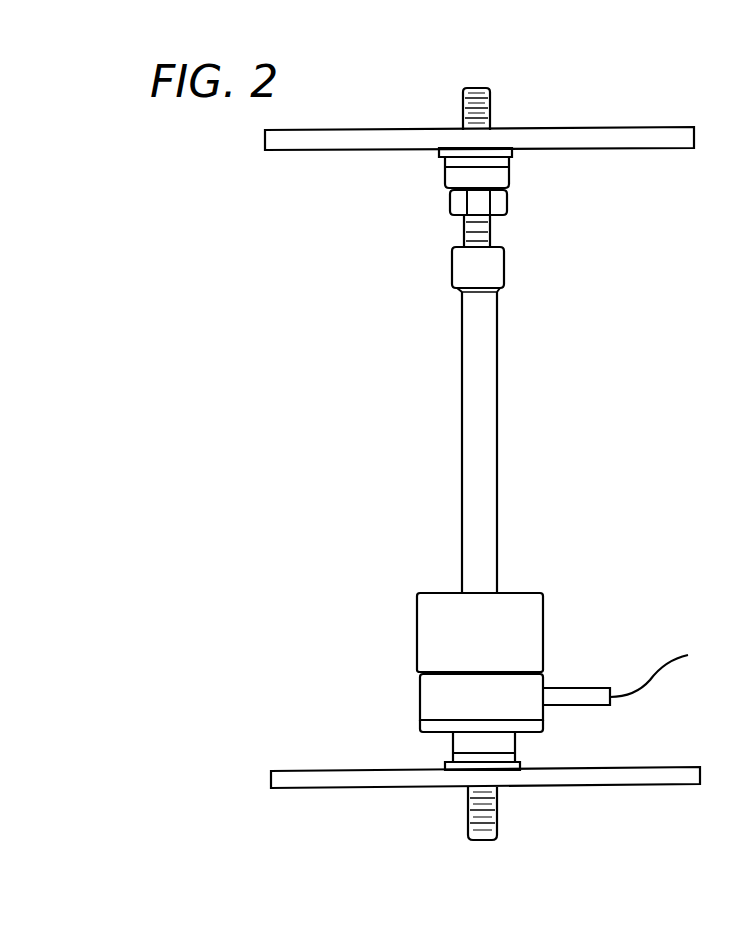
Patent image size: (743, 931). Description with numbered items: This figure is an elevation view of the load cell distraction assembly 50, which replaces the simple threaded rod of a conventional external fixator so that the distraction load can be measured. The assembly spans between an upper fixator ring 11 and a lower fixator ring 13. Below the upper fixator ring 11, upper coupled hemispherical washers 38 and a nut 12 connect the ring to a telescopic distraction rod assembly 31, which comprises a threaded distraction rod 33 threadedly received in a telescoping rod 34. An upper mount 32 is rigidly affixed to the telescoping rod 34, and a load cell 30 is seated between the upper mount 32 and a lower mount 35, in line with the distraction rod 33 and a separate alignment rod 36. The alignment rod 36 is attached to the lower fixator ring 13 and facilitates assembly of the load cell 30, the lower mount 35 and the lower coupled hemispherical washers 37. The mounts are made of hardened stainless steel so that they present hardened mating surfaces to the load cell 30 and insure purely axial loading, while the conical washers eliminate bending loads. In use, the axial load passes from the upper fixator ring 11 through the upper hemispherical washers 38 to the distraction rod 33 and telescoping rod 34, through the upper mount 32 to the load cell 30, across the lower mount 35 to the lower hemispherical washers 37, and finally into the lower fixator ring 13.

The upper fixator ring 11 is at (370, 129).
The nut 12 is at (450, 196).
The lower fixator ring 13 is at (331, 788).
The load cell 30 is at (420, 684).
The telescopic distraction rod assembly 31 is at (443, 436).
The upper mount 32 is at (417, 618).
The threaded distraction rod 33 is at (490, 232).
The telescoping rod 34 is at (499, 520).
The lower mount 35 is at (420, 728).
The alignment rod 36 is at (497, 812).
The lower coupled hemispherical washers 37 is at (515, 757).
The upper coupled hemispherical washers 38 is at (509, 174).
The load cell distraction assembly 50 is at (577, 442).